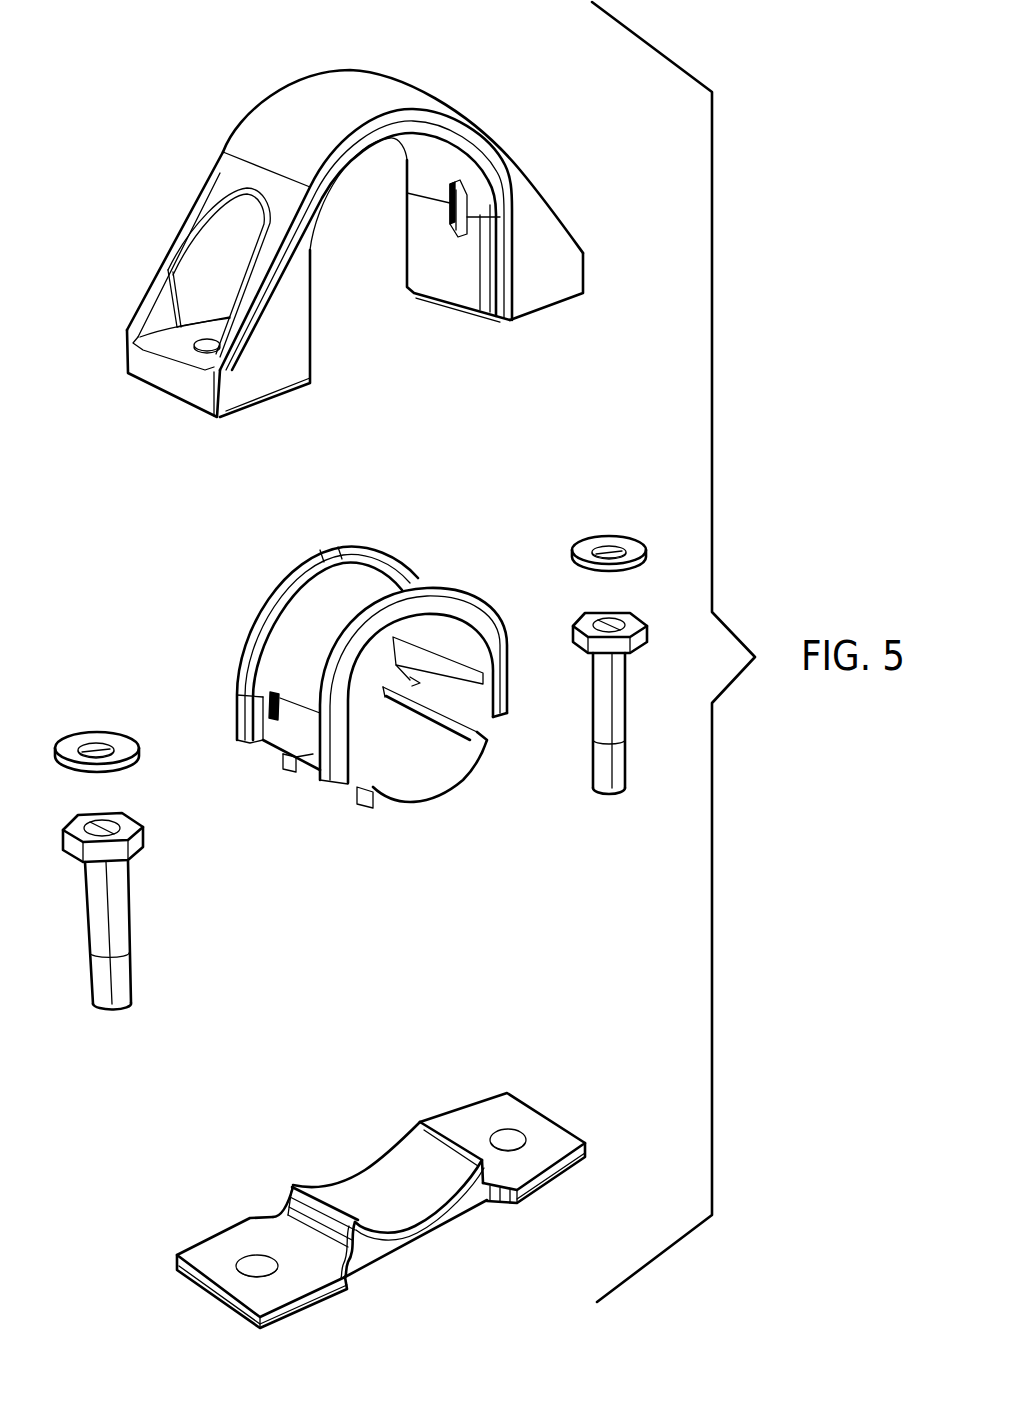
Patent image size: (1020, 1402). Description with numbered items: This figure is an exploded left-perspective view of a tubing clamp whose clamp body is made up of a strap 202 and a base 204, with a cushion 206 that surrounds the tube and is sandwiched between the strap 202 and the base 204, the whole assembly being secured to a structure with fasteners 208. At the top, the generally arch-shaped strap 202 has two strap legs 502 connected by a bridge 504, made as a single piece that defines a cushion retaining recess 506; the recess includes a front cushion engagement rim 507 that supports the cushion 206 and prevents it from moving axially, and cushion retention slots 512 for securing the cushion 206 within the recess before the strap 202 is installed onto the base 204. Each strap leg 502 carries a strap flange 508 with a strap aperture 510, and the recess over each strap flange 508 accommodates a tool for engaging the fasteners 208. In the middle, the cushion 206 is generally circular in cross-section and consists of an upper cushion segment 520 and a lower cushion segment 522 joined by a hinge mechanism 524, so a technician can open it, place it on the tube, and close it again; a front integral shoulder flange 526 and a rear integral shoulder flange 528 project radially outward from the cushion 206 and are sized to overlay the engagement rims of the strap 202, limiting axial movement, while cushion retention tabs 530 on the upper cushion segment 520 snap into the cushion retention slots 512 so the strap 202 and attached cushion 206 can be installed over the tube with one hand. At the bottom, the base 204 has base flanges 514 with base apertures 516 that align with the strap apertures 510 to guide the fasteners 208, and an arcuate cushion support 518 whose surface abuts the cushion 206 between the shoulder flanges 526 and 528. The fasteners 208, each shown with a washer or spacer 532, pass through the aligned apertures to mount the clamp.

The strap 202 is at (472, 86).
The base 204 is at (418, 1102).
The cushion 206 is at (438, 563).
The fasteners 208 is at (620, 713).
The strap legs 502 is at (553, 282).
The bridge 504 is at (358, 101).
The cushion retaining recess 506 is at (350, 328).
The front cushion engagement rim 507 is at (477, 262).
The strap flange 508 is at (170, 347).
The strap aperture 510 is at (207, 351).
The cushion retention slot 512 is at (448, 208).
The base flange 514 is at (508, 1110).
The base aperture 516 is at (512, 1135).
The arcuate cushion support 518 is at (384, 1197).
The upper cushion segment 520 is at (320, 627).
The lower cushion segment 522 is at (413, 753).
The hinge mechanism 524 is at (358, 788).
The front integral shoulder flange 526 is at (483, 627).
The rear integral shoulder flange 528 is at (248, 627).
The cushion retention tab 530 is at (266, 708).
The washers or spacers 532 is at (628, 546).